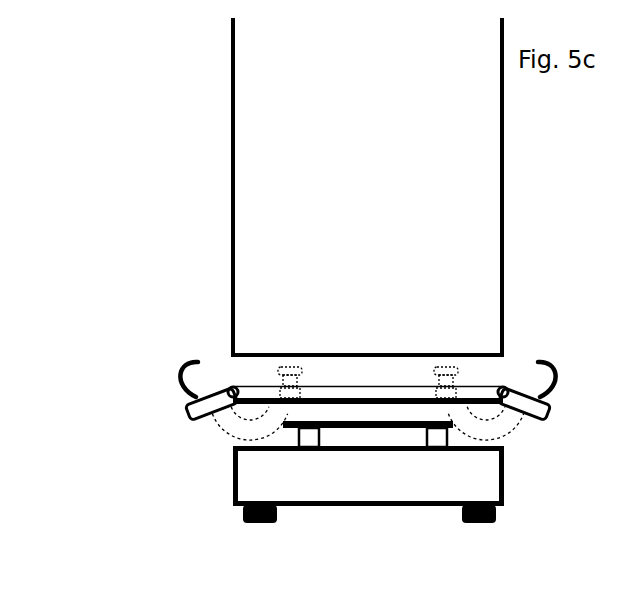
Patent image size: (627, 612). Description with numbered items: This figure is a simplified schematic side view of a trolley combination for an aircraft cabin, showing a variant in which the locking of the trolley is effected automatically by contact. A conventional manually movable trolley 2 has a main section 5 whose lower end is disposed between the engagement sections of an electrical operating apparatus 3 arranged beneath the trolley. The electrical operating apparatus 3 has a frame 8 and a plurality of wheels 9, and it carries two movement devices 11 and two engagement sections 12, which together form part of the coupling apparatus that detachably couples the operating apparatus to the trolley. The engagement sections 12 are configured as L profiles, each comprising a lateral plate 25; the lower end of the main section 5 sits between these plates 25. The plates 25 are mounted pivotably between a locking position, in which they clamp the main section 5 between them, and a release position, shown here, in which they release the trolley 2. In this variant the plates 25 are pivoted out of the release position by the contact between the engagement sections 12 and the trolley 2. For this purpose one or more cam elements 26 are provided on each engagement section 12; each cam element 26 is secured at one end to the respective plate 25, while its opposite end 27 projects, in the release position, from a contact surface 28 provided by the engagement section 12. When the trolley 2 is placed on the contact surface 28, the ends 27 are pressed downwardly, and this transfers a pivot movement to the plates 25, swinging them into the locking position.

The trolley 2 is at (204, 79).
The electrical operating apparatus 3 is at (155, 367).
The main section 5 is at (480, 183).
The frame 8 is at (485, 477).
The wheels 9 is at (255, 522).
The movement devices 11 is at (467, 444).
The engagement sections 12 is at (426, 383).
The lateral plate 25 is at (187, 411).
The cam elements 26 is at (229, 430).
The opposite end 27 is at (292, 370).
The contact surface 28 is at (243, 383).